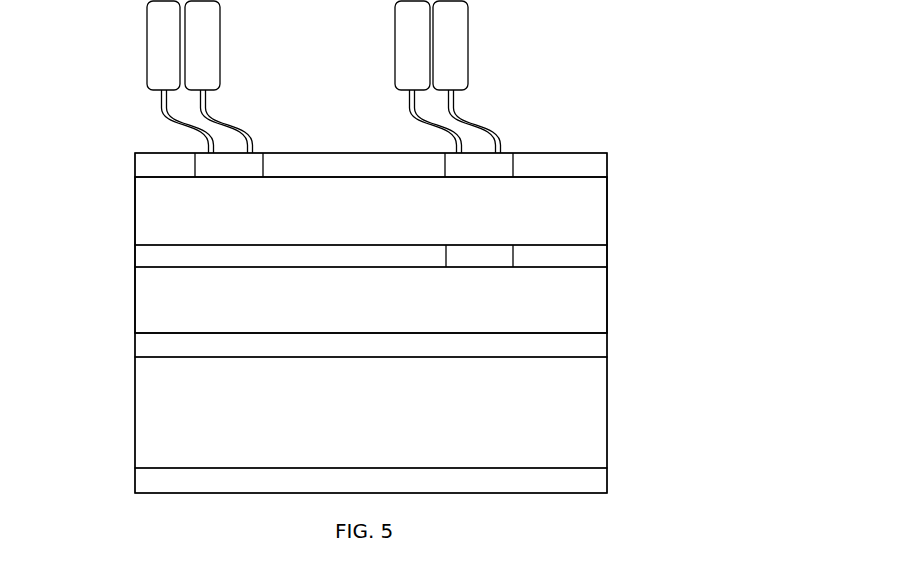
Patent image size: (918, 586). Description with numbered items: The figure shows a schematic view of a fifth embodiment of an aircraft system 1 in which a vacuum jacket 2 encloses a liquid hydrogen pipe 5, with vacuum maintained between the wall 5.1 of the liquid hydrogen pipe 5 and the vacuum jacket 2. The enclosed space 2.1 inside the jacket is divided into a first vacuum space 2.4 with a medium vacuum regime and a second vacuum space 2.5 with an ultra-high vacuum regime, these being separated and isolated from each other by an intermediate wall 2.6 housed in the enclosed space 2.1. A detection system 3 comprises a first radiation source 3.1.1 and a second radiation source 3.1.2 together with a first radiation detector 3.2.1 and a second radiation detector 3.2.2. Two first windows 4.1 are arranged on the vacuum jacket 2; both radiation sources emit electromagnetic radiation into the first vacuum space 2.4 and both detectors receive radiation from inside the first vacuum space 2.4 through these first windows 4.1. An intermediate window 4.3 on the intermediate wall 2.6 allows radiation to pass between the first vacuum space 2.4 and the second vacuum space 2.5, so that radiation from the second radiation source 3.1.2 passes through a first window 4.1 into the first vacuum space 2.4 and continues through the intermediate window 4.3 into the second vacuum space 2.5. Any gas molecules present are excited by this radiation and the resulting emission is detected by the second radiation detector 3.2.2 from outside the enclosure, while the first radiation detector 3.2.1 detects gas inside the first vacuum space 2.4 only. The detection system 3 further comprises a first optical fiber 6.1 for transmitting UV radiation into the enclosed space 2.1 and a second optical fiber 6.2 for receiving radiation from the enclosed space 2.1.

The aircraft system 1 is at (654, 417).
The vacuum jacket 2 is at (406, 167).
The enclosed space 2.1 is at (357, 245).
The first vacuum space 2.4 is at (355, 210).
The second vacuum space 2.5 is at (213, 310).
The intermediate wall 2.6 is at (418, 297).
The detection system 3 is at (320, 62).
The first radiation source 3.1.1 is at (153, 44).
The first radiation detector 3.2.1 is at (210, 55).
The second radiation source 3.1.2 is at (408, 40).
The second radiation detector 3.2.2 is at (457, 63).
The first windows 4.1 is at (245, 165).
The intermediate window 4.3 is at (497, 253).
The liquid hydrogen pipe 5 is at (160, 422).
The wall 5.1 is at (592, 348).
The first optical fiber 6.1 is at (163, 109).
The second optical fiber 6.2 is at (208, 108).